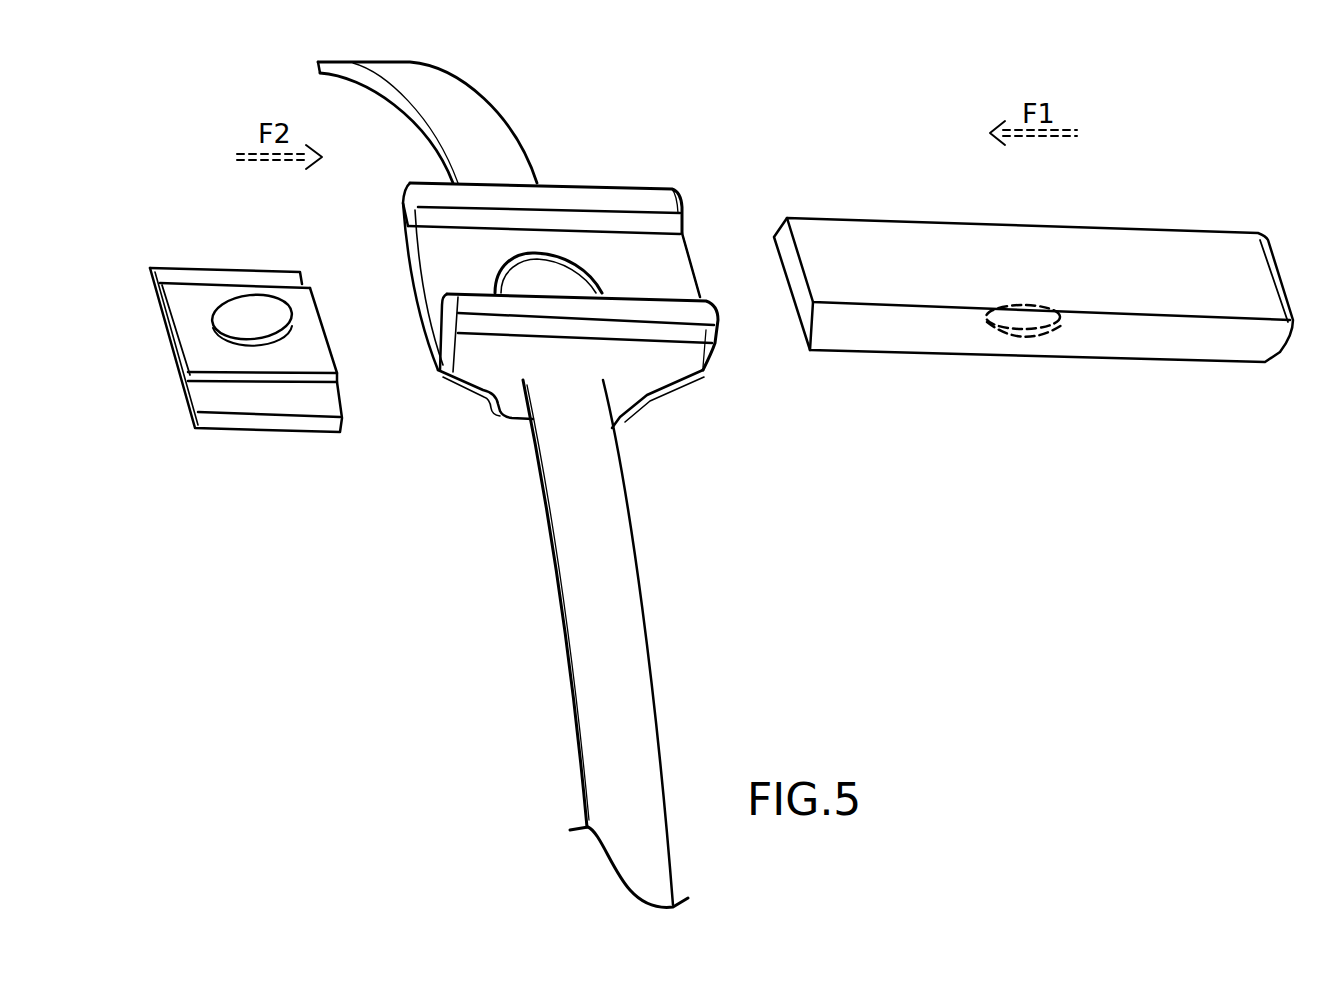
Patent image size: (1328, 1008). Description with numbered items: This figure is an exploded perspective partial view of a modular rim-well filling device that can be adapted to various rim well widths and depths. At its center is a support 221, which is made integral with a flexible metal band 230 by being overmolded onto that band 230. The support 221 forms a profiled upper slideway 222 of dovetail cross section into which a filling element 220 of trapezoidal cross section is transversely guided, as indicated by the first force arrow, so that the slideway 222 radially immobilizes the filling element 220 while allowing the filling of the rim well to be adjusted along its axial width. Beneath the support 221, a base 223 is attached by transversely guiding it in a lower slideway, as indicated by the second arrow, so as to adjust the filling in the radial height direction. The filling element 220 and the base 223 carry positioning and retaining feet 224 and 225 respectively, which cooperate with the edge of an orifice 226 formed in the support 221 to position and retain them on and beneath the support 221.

The filling element 220 is at (1041, 238).
The support 221 is at (606, 180).
The upper slideway 222 is at (698, 297).
The base 223 is at (224, 294).
The positioning and retaining foot 224 is at (1043, 302).
The positioning and retaining foot 225 is at (240, 320).
The orifice 226 is at (520, 257).
The flexible metal band 230 is at (649, 597).